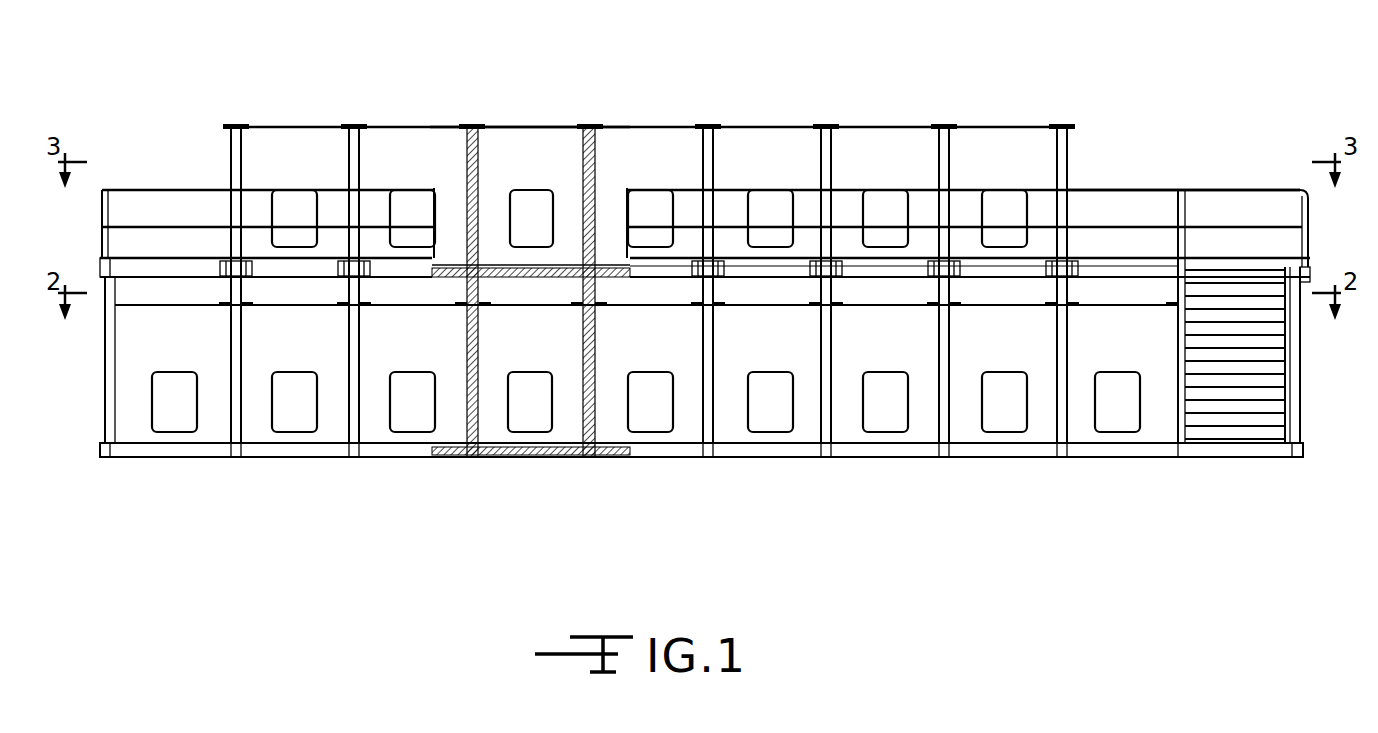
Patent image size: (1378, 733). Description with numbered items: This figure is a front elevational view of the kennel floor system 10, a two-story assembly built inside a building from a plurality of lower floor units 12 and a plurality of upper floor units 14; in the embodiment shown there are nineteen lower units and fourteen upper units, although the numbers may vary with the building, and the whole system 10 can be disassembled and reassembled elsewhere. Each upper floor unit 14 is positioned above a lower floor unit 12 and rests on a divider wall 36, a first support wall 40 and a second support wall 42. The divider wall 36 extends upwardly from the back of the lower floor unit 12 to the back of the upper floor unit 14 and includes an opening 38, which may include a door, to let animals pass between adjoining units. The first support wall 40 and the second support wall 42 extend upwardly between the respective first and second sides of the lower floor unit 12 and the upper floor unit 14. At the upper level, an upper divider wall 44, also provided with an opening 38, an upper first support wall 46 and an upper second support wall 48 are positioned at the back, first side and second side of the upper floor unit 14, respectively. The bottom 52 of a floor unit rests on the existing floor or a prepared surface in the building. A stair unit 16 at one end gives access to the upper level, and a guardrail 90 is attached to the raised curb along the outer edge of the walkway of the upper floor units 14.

The kennel floor system 10 is at (1068, 50).
The lower floor unit 12 is at (493, 453).
The upper floor unit 14 is at (512, 280).
The stair unit 16 is at (1248, 385).
The divider wall 36 is at (567, 432).
The opening 38 is at (528, 207).
The first support wall 40 is at (592, 422).
The second support wall 42 is at (465, 410).
The upper divider wall 44 is at (494, 137).
The upper first support wall 46 is at (598, 157).
The upper second support wall 48 is at (470, 137).
The bottom 52 is at (549, 280).
The guardrail 90 is at (1137, 190).